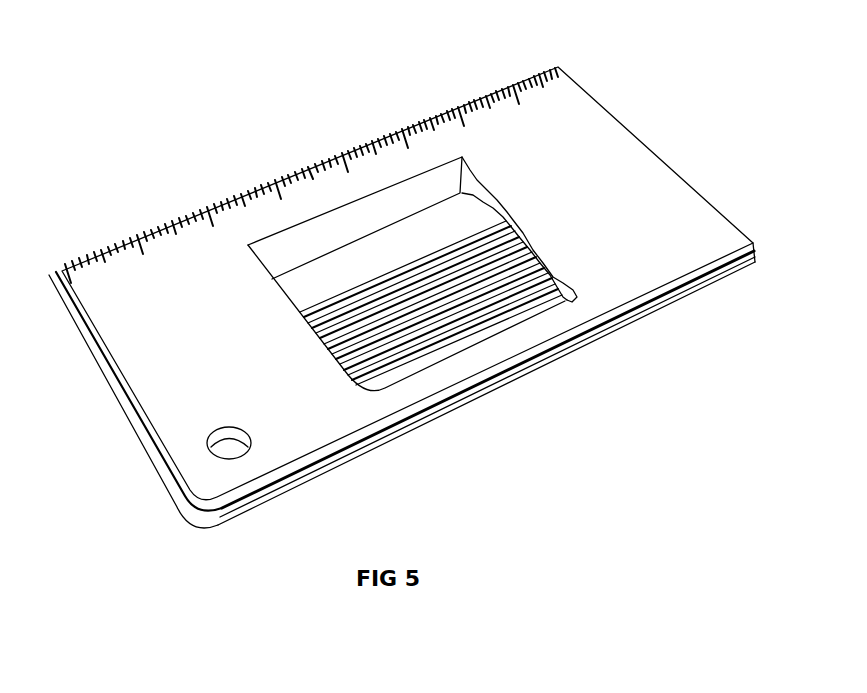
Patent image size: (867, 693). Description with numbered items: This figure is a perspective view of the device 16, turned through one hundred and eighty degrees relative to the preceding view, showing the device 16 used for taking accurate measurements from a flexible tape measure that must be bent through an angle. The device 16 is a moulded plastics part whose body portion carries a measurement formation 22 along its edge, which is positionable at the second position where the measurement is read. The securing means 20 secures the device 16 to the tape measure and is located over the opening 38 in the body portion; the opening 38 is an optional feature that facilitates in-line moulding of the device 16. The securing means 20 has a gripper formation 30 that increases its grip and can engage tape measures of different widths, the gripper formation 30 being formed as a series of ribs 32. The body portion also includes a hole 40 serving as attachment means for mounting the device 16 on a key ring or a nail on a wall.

The device 16 is at (412, 327).
The securing means 20 is at (318, 283).
The measurement formation 22 is at (700, 190).
The gripper formation 30 is at (518, 240).
The ribs 32 is at (515, 233).
The opening 38 is at (407, 205).
The hole 40 is at (236, 450).